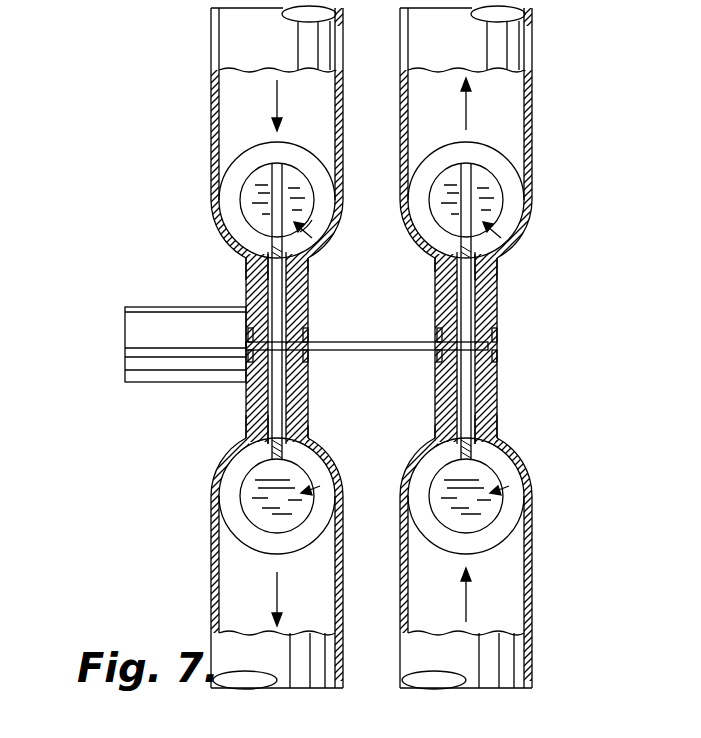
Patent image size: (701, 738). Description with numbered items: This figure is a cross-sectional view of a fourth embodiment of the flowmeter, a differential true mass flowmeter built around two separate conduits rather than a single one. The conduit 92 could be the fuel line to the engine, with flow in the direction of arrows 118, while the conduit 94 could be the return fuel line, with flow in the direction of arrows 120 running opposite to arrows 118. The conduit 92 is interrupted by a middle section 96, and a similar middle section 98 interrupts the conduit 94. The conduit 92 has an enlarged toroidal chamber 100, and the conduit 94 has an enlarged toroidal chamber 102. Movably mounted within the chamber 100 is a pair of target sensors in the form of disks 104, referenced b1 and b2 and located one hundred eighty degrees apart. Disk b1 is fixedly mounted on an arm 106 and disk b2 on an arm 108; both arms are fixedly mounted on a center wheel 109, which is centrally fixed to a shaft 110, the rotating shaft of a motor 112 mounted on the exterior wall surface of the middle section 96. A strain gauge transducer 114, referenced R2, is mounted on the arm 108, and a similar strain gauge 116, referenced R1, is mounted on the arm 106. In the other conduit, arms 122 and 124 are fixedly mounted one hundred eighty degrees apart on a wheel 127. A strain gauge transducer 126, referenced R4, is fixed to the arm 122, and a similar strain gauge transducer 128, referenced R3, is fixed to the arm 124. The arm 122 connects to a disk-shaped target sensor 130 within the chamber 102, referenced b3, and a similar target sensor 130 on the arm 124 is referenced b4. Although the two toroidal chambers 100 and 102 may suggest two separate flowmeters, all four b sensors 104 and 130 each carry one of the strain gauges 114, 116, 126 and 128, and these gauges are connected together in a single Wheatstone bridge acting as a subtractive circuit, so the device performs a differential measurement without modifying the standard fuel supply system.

The conduit 92 is at (213, 145).
The conduit 94 is at (532, 143).
The middle section 96 is at (247, 402).
The middle section 98 is at (497, 378).
The toroidal chamber 100 is at (242, 194).
The toroidal chamber 102 is at (492, 210).
The disk 104 is at (250, 224).
The arm 106 is at (262, 462).
The arm 108 is at (320, 224).
The center wheel 109 is at (300, 320).
The shaft 110 is at (408, 352).
The motor 112 is at (125, 320).
The transducer 114 is at (246, 258).
The strain gauge 116 is at (252, 438).
The arrows 118 is at (272, 108).
The arrows 120 is at (532, 100).
The arm 122 is at (478, 455).
The arm 124 is at (495, 232).
The strain gauge transducer 126 is at (492, 435).
The wheel 127 is at (500, 322).
The strain gauge transducer 128 is at (497, 272).
The target sensor 130 is at (495, 190).
The disk b1 is at (322, 486).
The disk b2 is at (306, 241).
The target sensor b3 is at (511, 486).
The target sensor b4 is at (503, 241).
The strain gauge R1 is at (306, 425).
The transducer R2 is at (308, 272).
The strain gauge transducer R3 is at (436, 425).
The strain gauge transducer R4 is at (436, 272).